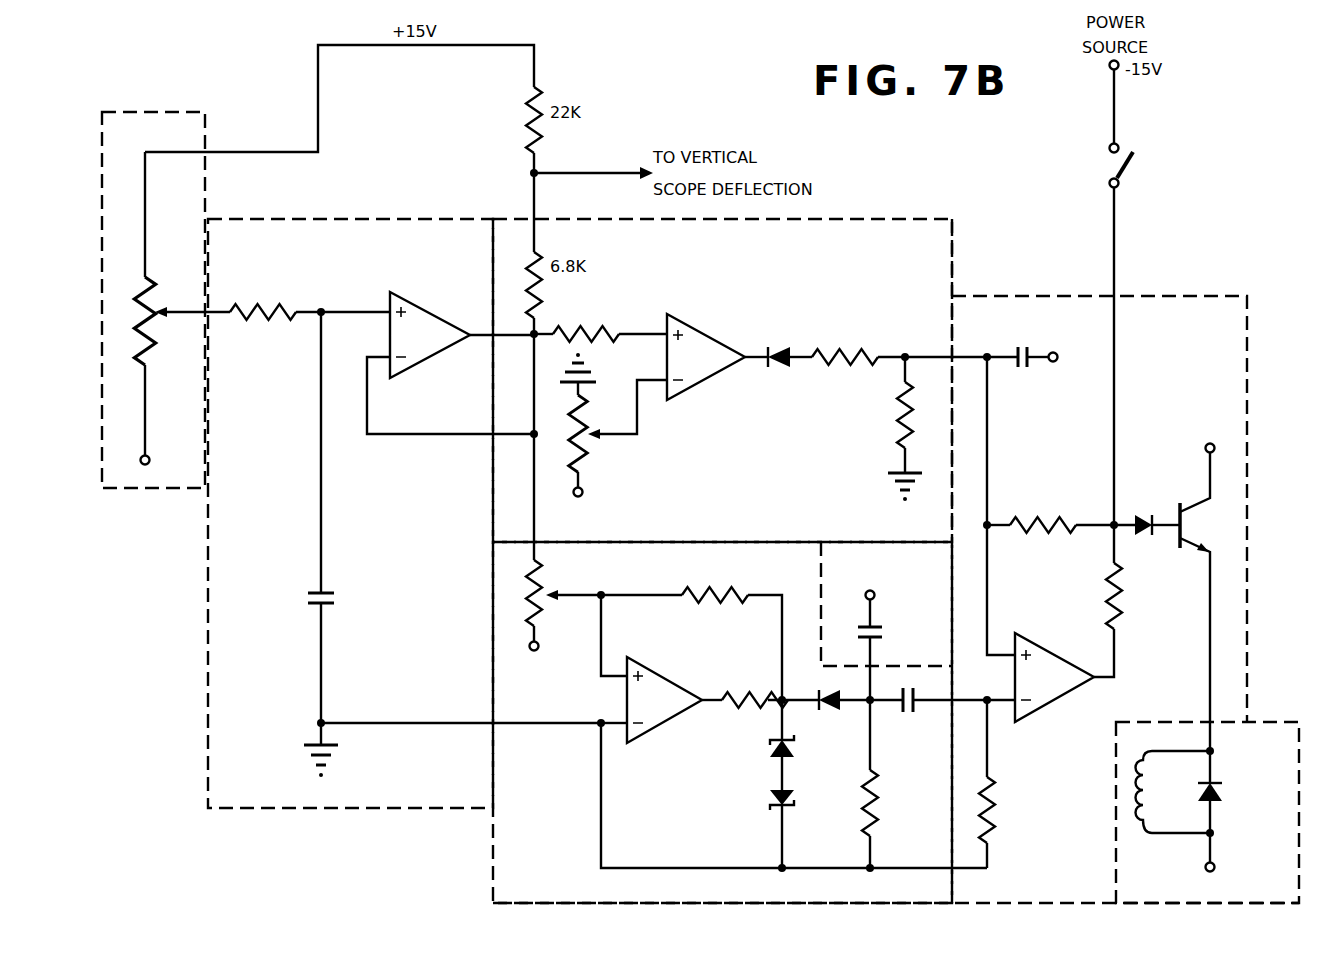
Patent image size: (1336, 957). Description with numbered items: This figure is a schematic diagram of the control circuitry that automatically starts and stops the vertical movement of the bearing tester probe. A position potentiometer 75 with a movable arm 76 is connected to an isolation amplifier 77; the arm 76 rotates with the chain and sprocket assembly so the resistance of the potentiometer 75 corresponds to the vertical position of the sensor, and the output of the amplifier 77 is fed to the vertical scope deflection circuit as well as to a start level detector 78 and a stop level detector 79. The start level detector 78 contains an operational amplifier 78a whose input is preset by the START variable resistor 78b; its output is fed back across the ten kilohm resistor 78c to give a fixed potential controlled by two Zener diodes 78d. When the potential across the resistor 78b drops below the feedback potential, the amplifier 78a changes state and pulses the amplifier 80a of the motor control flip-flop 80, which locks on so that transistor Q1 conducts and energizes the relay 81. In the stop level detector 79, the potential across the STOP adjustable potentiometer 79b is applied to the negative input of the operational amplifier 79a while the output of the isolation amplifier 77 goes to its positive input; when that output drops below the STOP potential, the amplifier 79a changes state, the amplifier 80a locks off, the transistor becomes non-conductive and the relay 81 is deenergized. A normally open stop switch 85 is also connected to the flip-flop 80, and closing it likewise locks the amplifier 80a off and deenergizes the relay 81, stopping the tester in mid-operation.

The position potentiometer 75 is at (153, 274).
The movable arm 76 is at (149, 311).
The isolation amplifier 77 is at (404, 492).
The start level detector 78 is at (707, 722).
The operational amplifier 78a is at (678, 694).
The START variable resistor 78b is at (554, 617).
The 10k resistor 78c is at (691, 633).
The Zener diodes 78d is at (791, 784).
The stop level detector 79 is at (744, 374).
The operational amplifier 79a is at (718, 350).
The STOP adjustable potentiometer 79b is at (612, 434).
The motor control flip-flop 80 is at (1102, 525).
The amplifier 80a is at (1054, 666).
The relay 81 is at (1222, 785).
The stop switch 85 is at (1096, 124).